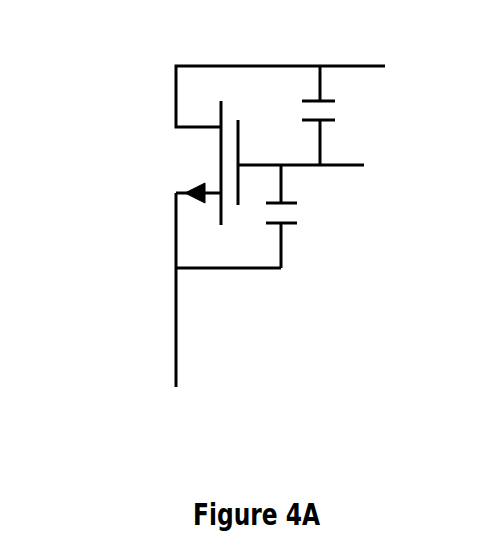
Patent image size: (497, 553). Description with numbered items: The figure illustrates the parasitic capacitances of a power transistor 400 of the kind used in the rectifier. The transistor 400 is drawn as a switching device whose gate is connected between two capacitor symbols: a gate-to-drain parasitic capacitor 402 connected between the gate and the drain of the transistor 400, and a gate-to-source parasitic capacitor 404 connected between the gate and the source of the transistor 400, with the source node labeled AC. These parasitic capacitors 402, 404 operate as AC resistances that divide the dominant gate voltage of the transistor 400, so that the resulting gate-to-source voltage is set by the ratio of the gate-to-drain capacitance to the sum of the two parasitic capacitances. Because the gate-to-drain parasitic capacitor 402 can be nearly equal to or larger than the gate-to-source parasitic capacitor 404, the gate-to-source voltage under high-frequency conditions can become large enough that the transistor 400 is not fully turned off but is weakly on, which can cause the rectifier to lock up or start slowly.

The transistor 400 is at (137, 153).
The parasitic capacitor Cgd 402 is at (328, 95).
The parasitic capacitor Cgs 404 is at (328, 287).